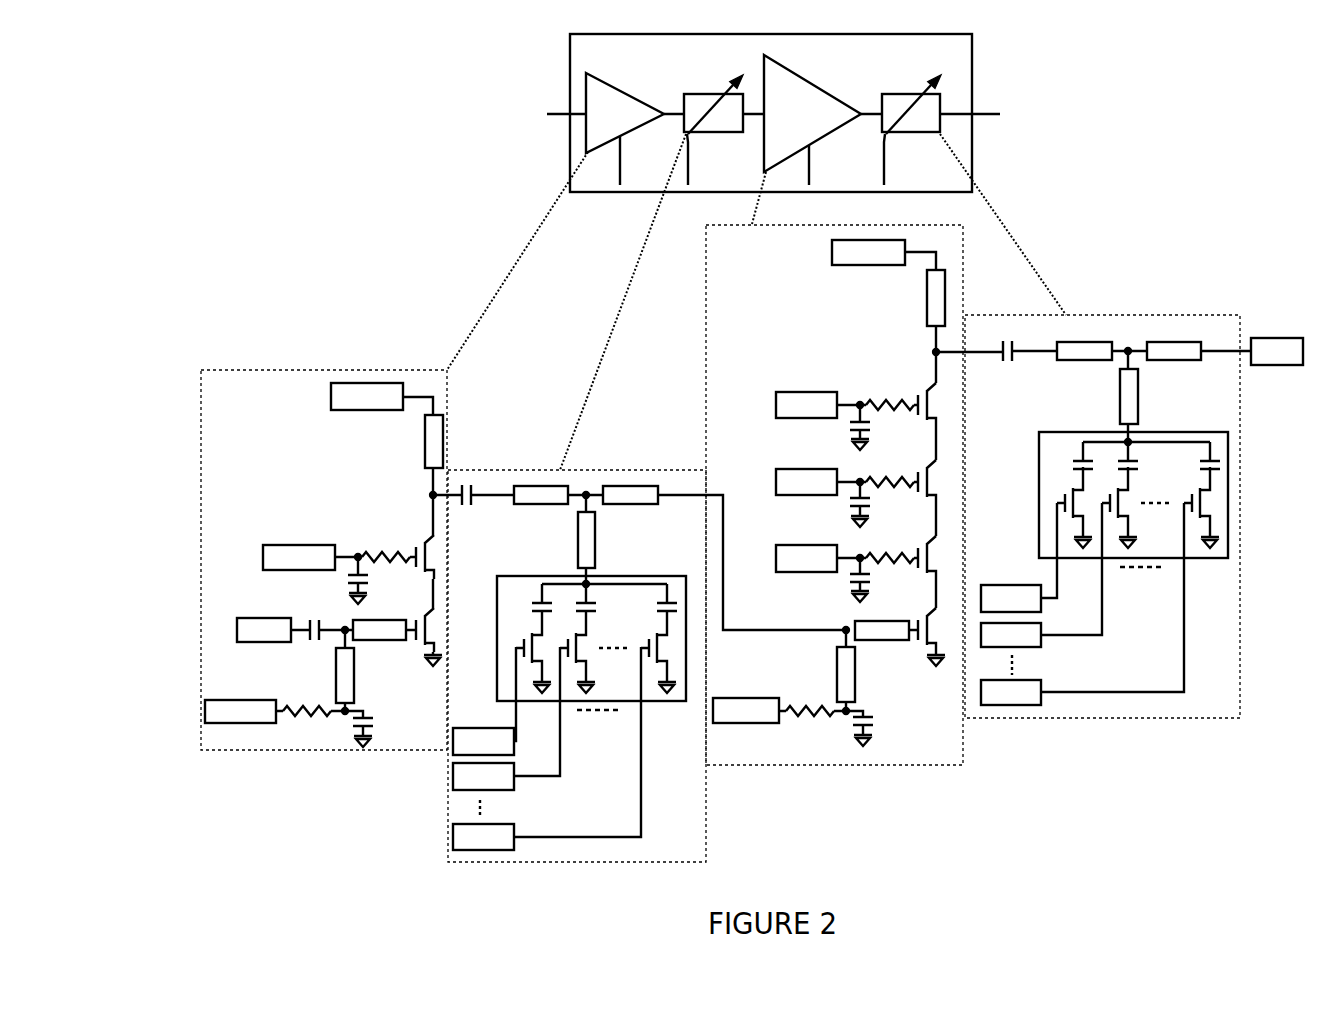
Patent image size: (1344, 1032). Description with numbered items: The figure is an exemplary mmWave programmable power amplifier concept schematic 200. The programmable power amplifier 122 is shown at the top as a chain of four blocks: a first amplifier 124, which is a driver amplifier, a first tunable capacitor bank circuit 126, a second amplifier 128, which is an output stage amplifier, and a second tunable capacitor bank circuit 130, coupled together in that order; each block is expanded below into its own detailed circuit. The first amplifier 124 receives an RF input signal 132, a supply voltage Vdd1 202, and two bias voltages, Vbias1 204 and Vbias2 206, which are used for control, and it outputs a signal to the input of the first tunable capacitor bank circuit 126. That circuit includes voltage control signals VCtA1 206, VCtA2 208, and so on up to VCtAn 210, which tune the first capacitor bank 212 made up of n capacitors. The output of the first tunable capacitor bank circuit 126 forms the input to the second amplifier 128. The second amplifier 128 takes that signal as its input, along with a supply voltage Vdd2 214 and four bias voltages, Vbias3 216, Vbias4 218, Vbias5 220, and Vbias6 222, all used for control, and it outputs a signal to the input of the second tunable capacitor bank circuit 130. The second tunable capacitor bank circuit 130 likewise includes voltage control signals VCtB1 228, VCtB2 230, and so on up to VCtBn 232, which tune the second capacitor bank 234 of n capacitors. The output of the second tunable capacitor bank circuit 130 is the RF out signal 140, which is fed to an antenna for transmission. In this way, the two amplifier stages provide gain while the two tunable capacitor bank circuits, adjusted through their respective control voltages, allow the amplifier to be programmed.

The mmWave programmable Power Amplifier concept schematic 200 is at (210, 28).
The programmable Power Amplifier 122 is at (569, 62).
The first amplifier 124 is at (609, 84).
The first tunable capacitor bank circuit 126 is at (699, 95).
The second amplifier 128 is at (817, 90).
The second tunable capacitor bank circuit 130 is at (897, 93).
The RF input signal 132 is at (248, 620).
The RF out signal 140 is at (1282, 337).
The supply voltage Vdd1 202 is at (362, 410).
The bias voltage Vbias1 204 is at (250, 702).
The bias voltage Vbias2 / voltage control signal VCtA1 206 is at (311, 542).
The voltage control signal VCtA2 208 is at (513, 783).
The voltage control signal VCtAn 210 is at (515, 830).
The first capacitor bank 212 is at (617, 575).
The supply voltage Vdd2 214 is at (875, 267).
The bias voltage Vbias3 216 is at (753, 725).
The bias voltage Vbias4 218 is at (810, 573).
The bias voltage Vbias5 220 is at (810, 496).
The bias voltage Vbias6 222 is at (810, 419).
The voltage control signal VCtB1 228 is at (1001, 585).
The voltage control signal VCtB2 230 is at (1042, 642).
The voltage control signal VCtBn 232 is at (1042, 688).
The second capacitor bank 234 is at (1038, 470).